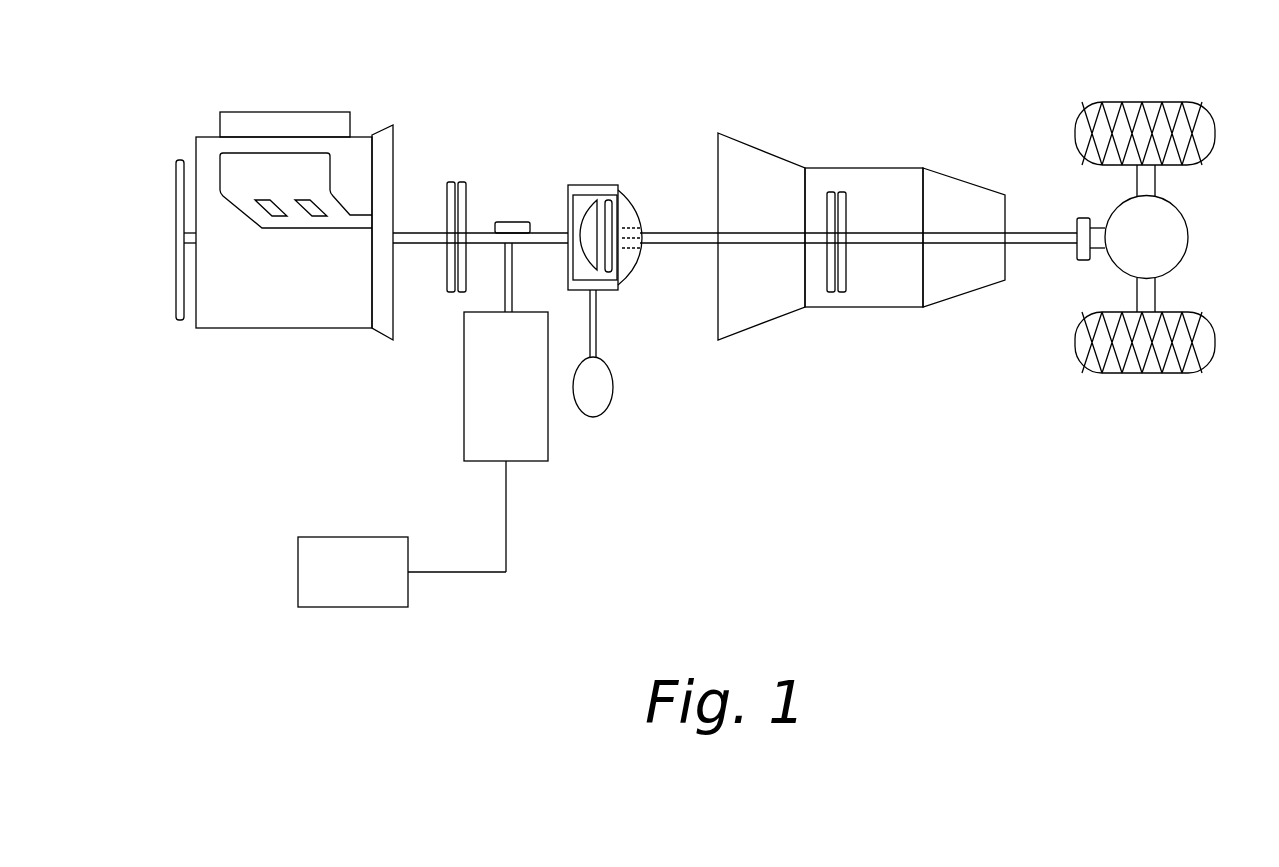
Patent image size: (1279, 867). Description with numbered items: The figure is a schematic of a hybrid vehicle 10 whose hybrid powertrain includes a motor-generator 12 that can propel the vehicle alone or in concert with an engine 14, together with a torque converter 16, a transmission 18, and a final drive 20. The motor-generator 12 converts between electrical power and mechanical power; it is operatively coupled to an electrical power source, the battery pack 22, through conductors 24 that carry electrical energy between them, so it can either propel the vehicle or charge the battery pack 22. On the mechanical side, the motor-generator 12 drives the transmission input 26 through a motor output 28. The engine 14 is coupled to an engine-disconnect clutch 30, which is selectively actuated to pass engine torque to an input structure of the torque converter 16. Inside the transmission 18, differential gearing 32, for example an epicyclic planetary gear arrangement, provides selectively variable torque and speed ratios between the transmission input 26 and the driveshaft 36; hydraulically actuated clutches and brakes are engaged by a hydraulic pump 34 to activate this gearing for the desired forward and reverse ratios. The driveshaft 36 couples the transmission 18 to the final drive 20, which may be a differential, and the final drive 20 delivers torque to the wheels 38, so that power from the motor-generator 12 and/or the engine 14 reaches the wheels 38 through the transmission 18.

The vehicle 10 is at (1092, 557).
The motor-generator 12 is at (532, 462).
The engine 14 is at (325, 328).
The torque converter 16 is at (583, 185).
The transmission 18 is at (872, 307).
The final drive 20 is at (1188, 233).
The battery pack 22 is at (298, 556).
The conductors 24 is at (448, 572).
The transmission input 26 is at (676, 232).
The motor output 28 is at (520, 220).
The engine-disconnect clutch 30 is at (450, 180).
The differential gearing 32 is at (842, 190).
The hydraulic pump 34 is at (605, 410).
The driveshaft 36 is at (1030, 230).
The wheels 38 is at (1128, 102).